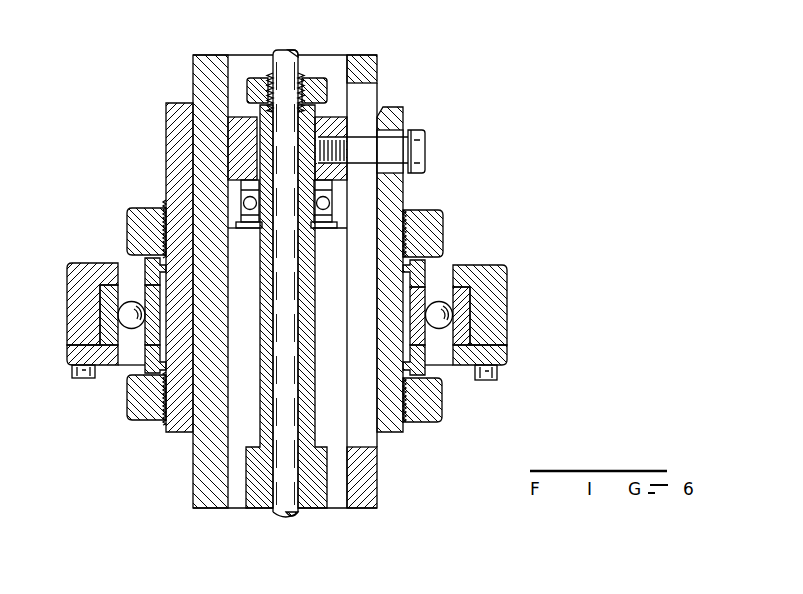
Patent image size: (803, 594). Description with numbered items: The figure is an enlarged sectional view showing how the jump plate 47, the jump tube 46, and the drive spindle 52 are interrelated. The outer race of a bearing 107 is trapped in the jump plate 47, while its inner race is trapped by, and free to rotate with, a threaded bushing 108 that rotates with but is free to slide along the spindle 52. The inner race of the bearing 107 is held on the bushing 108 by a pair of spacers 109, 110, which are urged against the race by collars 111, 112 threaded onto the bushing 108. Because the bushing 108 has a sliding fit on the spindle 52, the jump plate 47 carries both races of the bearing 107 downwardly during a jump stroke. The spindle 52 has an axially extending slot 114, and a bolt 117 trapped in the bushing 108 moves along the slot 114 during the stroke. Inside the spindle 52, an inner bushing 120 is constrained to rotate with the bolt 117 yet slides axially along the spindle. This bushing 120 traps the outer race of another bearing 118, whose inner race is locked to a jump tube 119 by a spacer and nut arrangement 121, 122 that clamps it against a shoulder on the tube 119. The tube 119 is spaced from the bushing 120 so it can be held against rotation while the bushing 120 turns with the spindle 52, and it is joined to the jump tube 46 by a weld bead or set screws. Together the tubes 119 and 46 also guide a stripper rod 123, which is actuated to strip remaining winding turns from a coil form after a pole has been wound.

The jump tube 46 is at (248, 503).
The jump plate 47 is at (75, 303).
The drive spindle 52 is at (367, 67).
The bearing 107 is at (130, 340).
The threaded bushing 108 is at (175, 118).
The spacer 109 is at (148, 270).
The spacer 110 is at (148, 372).
The collar 111 is at (425, 213).
The collar 112 is at (137, 422).
The axially extending slot 114 is at (360, 102).
The bolt 117 is at (417, 150).
The bearing 118 is at (325, 232).
The jump tube 119 is at (316, 358).
The inner bushing 120 is at (240, 117).
The spacer 121 is at (318, 110).
The nut 122 is at (319, 70).
The stripper rod 123 is at (287, 513).